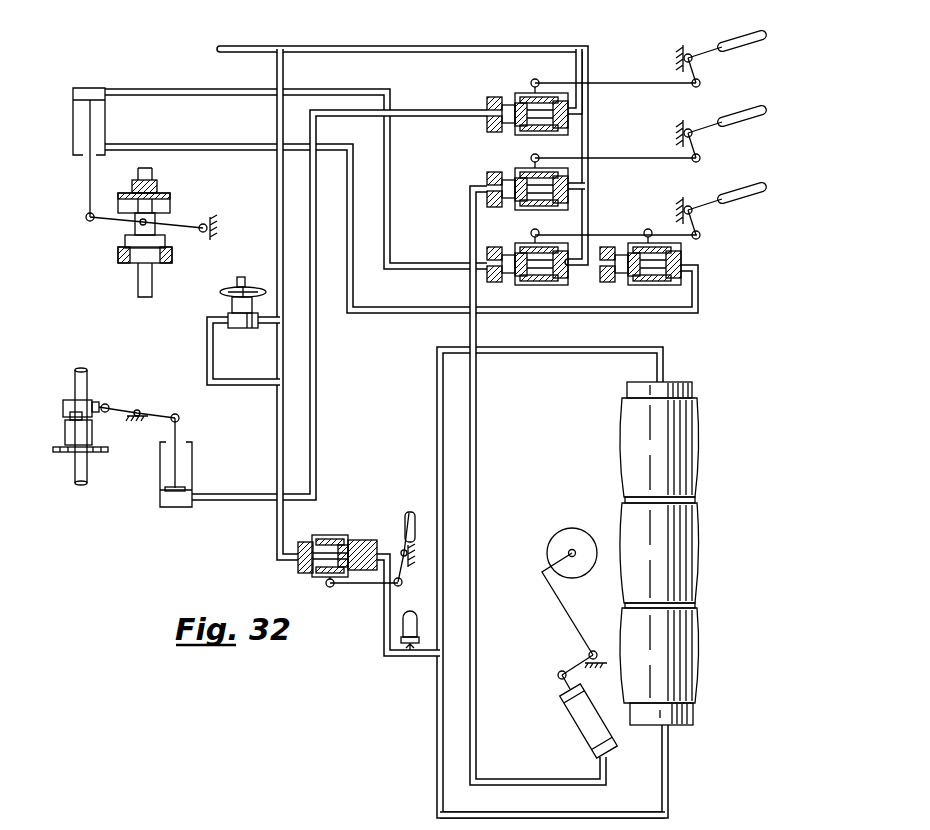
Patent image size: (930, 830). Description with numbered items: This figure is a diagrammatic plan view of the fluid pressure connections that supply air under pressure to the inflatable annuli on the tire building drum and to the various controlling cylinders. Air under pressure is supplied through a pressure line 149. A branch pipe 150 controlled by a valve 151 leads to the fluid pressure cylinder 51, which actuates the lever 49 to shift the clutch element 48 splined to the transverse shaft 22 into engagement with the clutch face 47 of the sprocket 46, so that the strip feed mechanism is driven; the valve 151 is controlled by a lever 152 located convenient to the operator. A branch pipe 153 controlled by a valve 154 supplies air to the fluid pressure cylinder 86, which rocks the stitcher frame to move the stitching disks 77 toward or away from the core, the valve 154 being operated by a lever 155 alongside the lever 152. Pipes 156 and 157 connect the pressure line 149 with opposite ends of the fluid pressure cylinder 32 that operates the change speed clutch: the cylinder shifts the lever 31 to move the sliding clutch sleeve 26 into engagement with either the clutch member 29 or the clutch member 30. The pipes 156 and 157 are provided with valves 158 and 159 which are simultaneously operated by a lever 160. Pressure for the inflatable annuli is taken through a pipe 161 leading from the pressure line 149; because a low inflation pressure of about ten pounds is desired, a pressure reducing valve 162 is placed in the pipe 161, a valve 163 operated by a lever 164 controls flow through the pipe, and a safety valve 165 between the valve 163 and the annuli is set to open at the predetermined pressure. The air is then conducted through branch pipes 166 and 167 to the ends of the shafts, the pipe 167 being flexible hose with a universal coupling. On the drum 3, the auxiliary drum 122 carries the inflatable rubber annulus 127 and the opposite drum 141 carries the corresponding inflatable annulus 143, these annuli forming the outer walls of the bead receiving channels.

The fluid pressure cylinder 32 is at (73, 98).
The clutch member 29 is at (160, 194).
The sliding clutch sleeve 26 is at (122, 236).
The clutch member 30 is at (130, 262).
The lever 31 is at (189, 222).
The pipe 161 is at (276, 186).
The pressure reducing valve 162 is at (230, 283).
The pressure line 149 is at (523, 47).
The valve 151 is at (491, 98).
The valve 154 is at (491, 173).
The valve 158 is at (499, 246).
The valve 159 is at (683, 252).
The lever 152 is at (720, 45).
The lever 155 is at (720, 120).
The lever 160 is at (717, 198).
The pipe 156 is at (392, 176).
The pipe 157 is at (355, 287).
The branch pipe 153 is at (478, 334).
The branch pipe 150 is at (318, 362).
The branch pipe 166 is at (548, 352).
The branch pipe 167 is at (510, 812).
The transverse shaft 22 is at (83, 410).
The clutch element 48 is at (63, 403).
The sprocket 46 is at (64, 442).
The clutch face 47 is at (98, 437).
The lever 49 is at (130, 410).
The fluid pressure cylinder 51 is at (193, 458).
The valve 163 is at (362, 536).
The lever 164 is at (403, 511).
The safety valve 165 is at (403, 626).
The stitching disks 77 is at (572, 527).
The fluid pressure cylinder 86 is at (567, 713).
The auxiliary drum 122 is at (695, 388).
The inflatable rubber annulus 127 is at (700, 437).
The drum 3 is at (700, 553).
The inflatable annulus 143 is at (698, 660).
The drum 141 is at (698, 708).